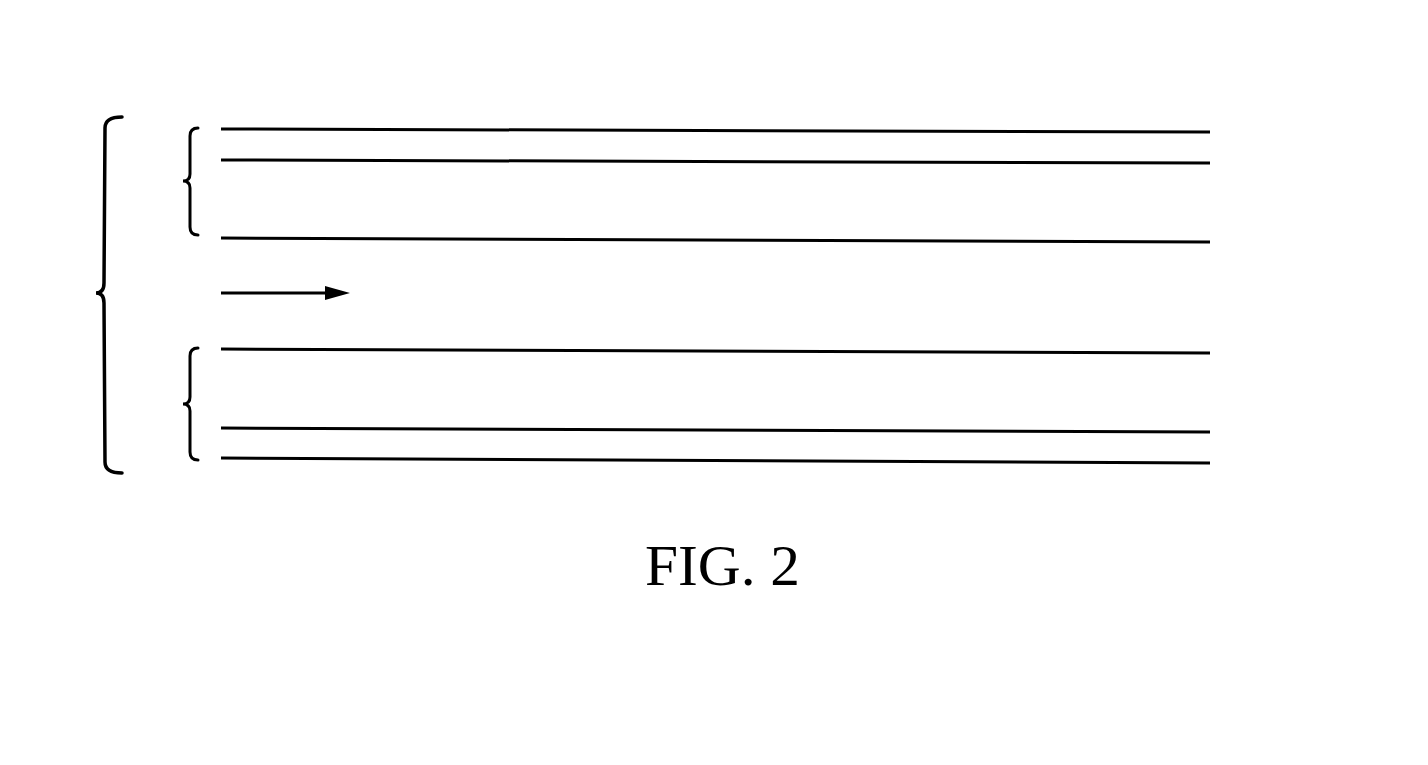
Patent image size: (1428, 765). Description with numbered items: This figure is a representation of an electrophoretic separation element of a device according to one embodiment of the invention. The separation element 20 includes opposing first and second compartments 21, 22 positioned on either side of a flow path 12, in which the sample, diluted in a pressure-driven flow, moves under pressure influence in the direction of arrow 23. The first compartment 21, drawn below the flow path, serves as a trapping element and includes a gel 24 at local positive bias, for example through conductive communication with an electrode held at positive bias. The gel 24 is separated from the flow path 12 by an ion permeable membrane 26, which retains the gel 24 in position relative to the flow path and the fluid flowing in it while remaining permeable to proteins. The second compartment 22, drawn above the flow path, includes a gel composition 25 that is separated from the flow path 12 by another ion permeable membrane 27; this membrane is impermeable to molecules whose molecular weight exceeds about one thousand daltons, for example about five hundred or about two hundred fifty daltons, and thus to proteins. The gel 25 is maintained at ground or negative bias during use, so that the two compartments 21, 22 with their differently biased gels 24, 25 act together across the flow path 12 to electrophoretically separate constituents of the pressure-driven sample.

The flow path 12 is at (989, 308).
The separation element 20 is at (726, 265).
The first compartment 21 is at (675, 405).
The second compartment 22 is at (675, 185).
The arrow 23 is at (290, 293).
The gel 24 is at (947, 412).
The gel composition 25 is at (709, 220).
The ion permeable membrane 26 is at (1238, 367).
The ion permeable membrane 27 is at (1243, 253).